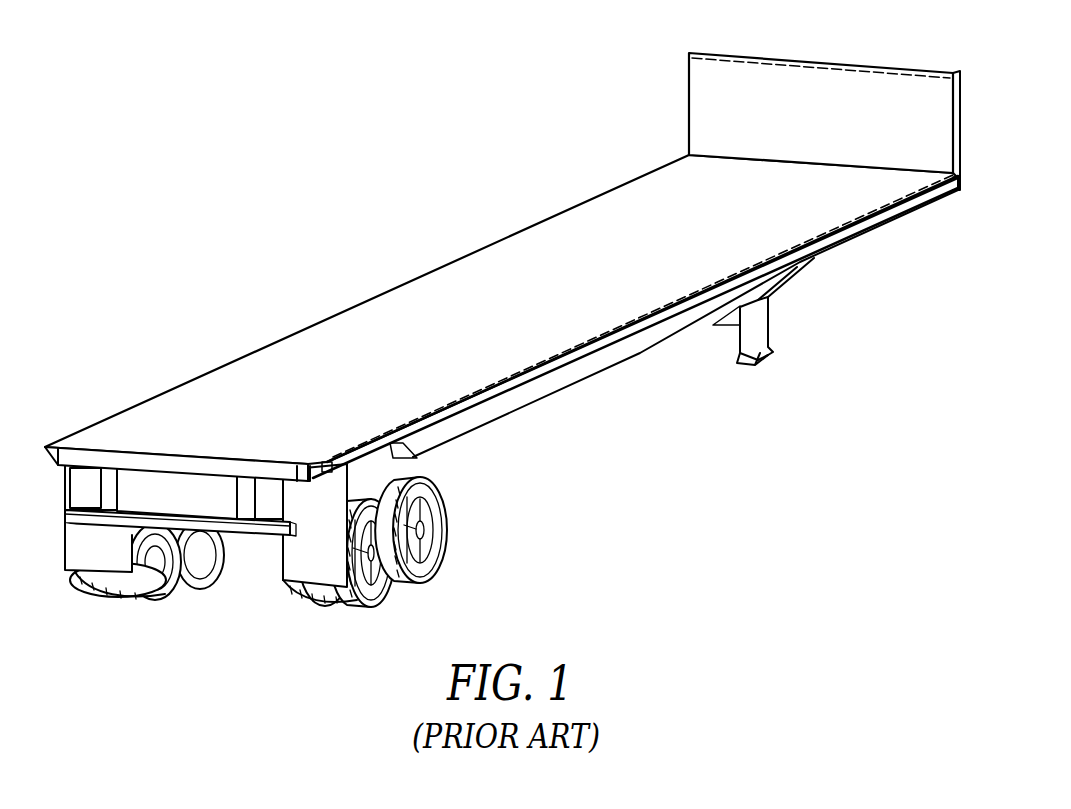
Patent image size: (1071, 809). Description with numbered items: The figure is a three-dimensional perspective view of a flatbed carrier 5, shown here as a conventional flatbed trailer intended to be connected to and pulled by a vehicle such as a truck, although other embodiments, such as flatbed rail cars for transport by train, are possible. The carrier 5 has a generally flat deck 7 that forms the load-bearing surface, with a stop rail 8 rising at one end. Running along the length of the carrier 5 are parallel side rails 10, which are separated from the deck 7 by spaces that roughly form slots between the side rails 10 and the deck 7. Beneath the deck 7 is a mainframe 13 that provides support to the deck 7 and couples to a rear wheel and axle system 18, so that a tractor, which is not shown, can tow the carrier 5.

The flatbed carrier 5 is at (366, 137).
The deck 7 is at (257, 375).
The stop rail 8 is at (870, 65).
The side rails 10 is at (476, 252).
The mainframe 13 is at (459, 446).
The rear wheel and axle system 18 is at (442, 567).